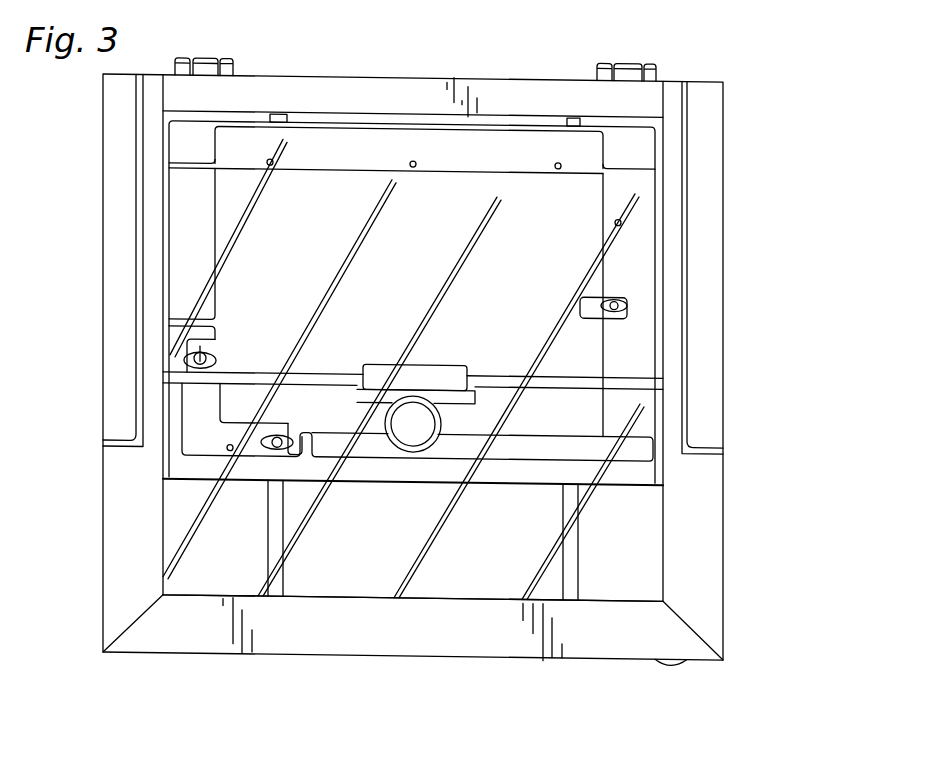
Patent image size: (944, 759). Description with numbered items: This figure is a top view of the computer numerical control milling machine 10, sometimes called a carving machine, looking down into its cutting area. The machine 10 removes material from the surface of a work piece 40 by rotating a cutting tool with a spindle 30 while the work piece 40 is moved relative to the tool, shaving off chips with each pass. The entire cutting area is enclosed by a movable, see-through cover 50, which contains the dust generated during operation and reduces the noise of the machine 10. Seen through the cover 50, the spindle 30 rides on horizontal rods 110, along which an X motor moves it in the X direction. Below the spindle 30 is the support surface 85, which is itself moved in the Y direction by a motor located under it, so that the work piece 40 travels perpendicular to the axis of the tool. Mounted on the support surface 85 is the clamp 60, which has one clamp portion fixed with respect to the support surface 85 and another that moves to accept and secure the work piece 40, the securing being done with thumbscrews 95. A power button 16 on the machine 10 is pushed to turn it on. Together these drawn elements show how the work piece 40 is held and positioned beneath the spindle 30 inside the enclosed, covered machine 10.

The CNC milling machine 10 is at (737, 492).
The power button 16 is at (664, 654).
The spindle 30 is at (405, 450).
The work piece 40 is at (551, 208).
The see-through cover 50 is at (385, 647).
The clamp 60 is at (197, 452).
The support surface 85 is at (553, 470).
The thumbscrews 95 is at (224, 349).
The horizontal rods 110 is at (487, 368).